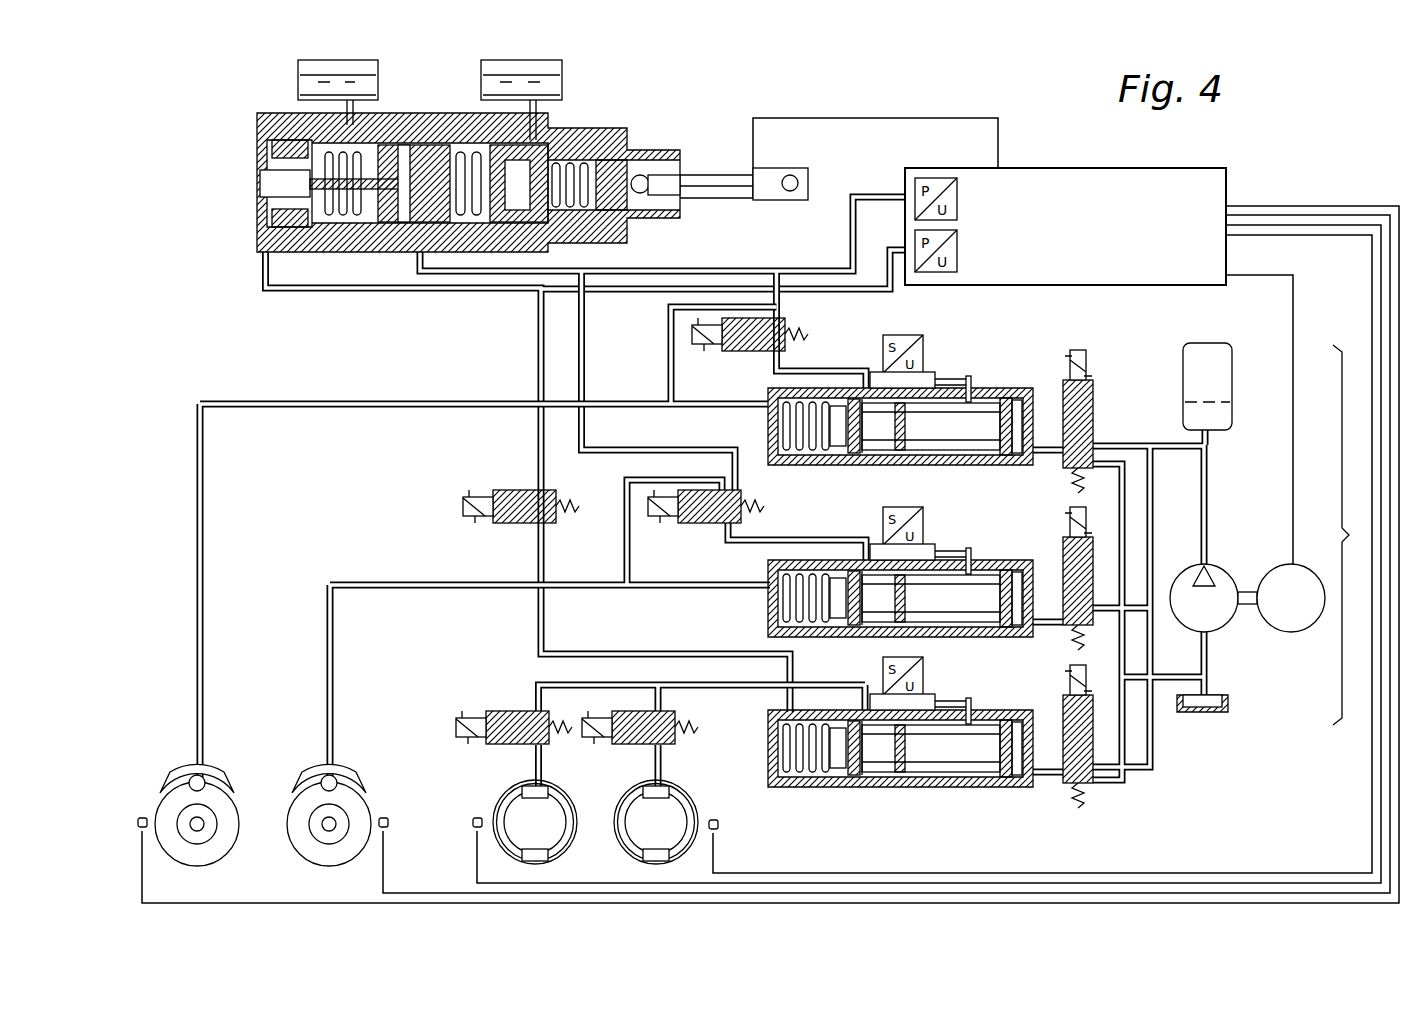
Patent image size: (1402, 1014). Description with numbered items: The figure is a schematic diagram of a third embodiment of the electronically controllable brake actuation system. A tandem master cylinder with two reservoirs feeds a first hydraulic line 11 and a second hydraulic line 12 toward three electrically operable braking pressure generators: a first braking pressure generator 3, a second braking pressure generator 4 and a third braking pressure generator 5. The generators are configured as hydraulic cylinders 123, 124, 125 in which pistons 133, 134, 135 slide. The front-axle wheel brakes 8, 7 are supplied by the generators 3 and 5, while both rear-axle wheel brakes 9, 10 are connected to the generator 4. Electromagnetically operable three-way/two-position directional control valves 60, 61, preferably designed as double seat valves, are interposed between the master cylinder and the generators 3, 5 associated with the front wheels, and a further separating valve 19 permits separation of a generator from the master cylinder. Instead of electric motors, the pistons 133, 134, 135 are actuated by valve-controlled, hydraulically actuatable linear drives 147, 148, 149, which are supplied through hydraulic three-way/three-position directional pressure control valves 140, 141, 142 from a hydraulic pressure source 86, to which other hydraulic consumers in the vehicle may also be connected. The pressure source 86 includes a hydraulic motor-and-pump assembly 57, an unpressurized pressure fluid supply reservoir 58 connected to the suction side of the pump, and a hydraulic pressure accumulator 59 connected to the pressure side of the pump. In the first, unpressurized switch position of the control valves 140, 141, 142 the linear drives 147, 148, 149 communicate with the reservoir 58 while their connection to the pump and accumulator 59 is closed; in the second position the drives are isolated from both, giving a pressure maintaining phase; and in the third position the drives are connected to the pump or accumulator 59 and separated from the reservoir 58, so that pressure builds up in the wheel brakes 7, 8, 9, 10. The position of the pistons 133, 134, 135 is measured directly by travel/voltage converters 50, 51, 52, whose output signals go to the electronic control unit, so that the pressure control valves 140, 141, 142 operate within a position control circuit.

The first braking pressure generator 3 is at (914, 581).
The second braking pressure generator 4 is at (904, 749).
The third braking pressure generator 5 is at (919, 410).
The hydraulic wheel brake 7 is at (226, 790).
The hydraulic wheel brake 8 is at (357, 790).
The hydraulic wheel brake 9 is at (570, 806).
The hydraulic wheel brake 10 is at (692, 806).
The first hydraulic line 11 is at (483, 275).
The second hydraulic line 12 is at (354, 292).
The separating valve 19 is at (527, 490).
The travel/voltage converter 50 is at (926, 520).
The travel/voltage converter 51 is at (926, 690).
The travel/voltage converter 52 is at (926, 347).
The hydraulic motor-and-pump assembly 57 is at (1333, 643).
The pressure fluid supply reservoir 58 is at (1215, 712).
The hydraulic pressure accumulator 59 is at (1184, 418).
The three-way/two-position directional control valve 60 is at (758, 503).
The three-way/two-position directional control valve 61 is at (797, 333).
The hydraulic pressure source 86 is at (1355, 535).
The hydraulic cylinder 123 is at (808, 562).
The hydraulic cylinder 124 is at (818, 790).
The hydraulic cylinder 125 is at (811, 390).
The piston 133 is at (872, 626).
The piston 134 is at (884, 790).
The piston 135 is at (872, 452).
The three-way/three-position directional pressure control valve 140 is at (1096, 548).
The three-way/three-position directional pressure control valve 141 is at (1094, 797).
The three-way/three-position directional pressure control valve 142 is at (1096, 392).
The hydraulically actuatable linear drive 147 is at (1026, 558).
The hydraulically actuatable linear drive 148 is at (1028, 790).
The hydraulically actuatable linear drive 149 is at (1030, 386).